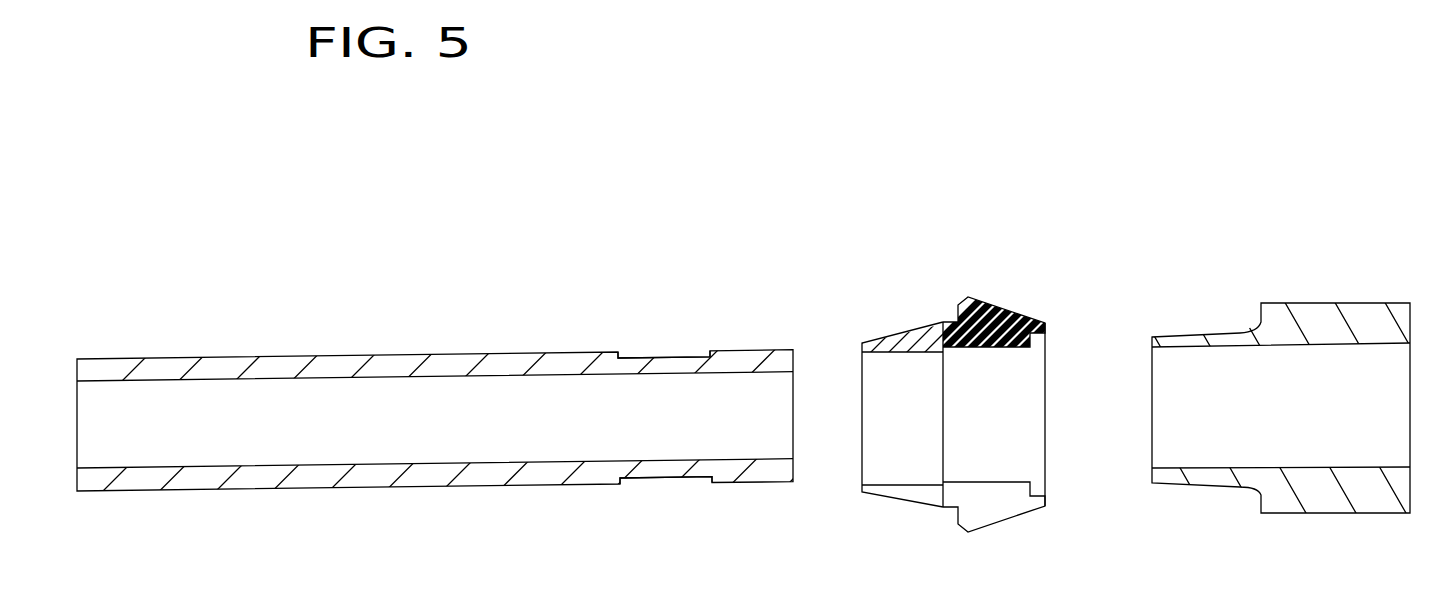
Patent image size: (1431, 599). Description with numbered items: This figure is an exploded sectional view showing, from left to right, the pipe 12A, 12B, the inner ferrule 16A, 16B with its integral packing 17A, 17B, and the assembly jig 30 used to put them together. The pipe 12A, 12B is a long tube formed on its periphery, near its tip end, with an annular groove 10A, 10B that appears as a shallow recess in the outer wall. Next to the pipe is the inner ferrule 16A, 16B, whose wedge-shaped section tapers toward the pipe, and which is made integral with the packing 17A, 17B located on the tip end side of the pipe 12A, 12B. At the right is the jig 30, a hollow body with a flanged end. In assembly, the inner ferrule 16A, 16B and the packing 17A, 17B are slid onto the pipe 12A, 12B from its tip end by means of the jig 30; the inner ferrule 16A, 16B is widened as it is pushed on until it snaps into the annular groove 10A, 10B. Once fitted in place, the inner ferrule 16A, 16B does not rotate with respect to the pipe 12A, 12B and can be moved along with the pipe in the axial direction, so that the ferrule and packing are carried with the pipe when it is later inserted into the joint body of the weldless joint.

The annular groove 10A is at (449, 419).
The annular groove 10B is at (605, 360).
The pipe 12A is at (665, 417).
The pipe 12B is at (665, 417).
The inner ferrule 16A is at (995, 371).
The inner ferrule 16B is at (912, 342).
The packing 17A is at (1118, 360).
The packing 17B is at (1003, 307).
The jig 30 is at (1302, 313).